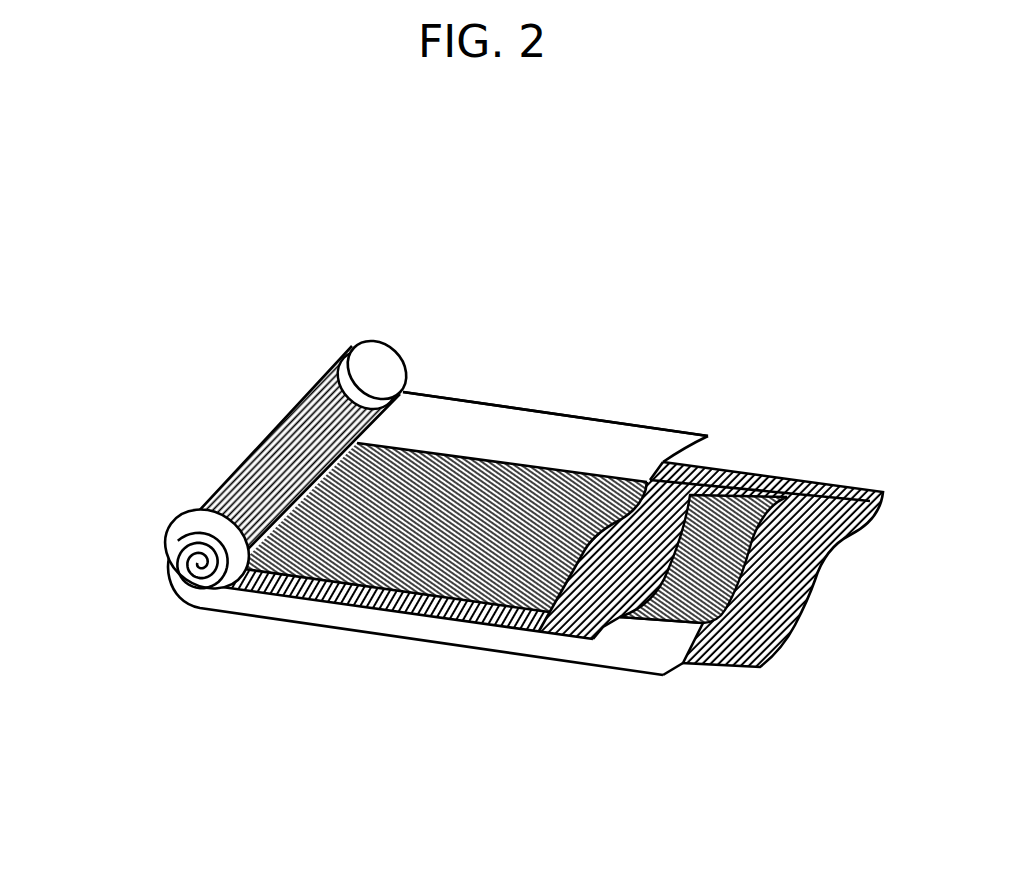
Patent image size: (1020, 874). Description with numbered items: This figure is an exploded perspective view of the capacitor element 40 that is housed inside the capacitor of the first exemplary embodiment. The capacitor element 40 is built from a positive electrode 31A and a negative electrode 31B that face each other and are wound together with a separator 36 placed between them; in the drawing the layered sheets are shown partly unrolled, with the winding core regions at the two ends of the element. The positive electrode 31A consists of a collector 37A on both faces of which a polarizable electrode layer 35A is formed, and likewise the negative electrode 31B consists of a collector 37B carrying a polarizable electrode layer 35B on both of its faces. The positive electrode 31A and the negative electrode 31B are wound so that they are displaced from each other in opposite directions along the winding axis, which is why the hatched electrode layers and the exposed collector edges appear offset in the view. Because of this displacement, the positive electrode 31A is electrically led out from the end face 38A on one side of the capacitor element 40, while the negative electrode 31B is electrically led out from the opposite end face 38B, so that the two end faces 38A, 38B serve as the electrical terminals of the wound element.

The capacitor element 40 is at (293, 347).
The end face 38A is at (403, 355).
The end face 38B is at (195, 523).
The separator 36 is at (287, 428).
The positive electrode 31A is at (587, 348).
The polarizable electrode layer 35A is at (523, 500).
The collector 37A is at (643, 450).
The negative electrode 31B is at (575, 773).
The polarizable electrode layer 35B is at (678, 610).
The collector 37B is at (590, 657).